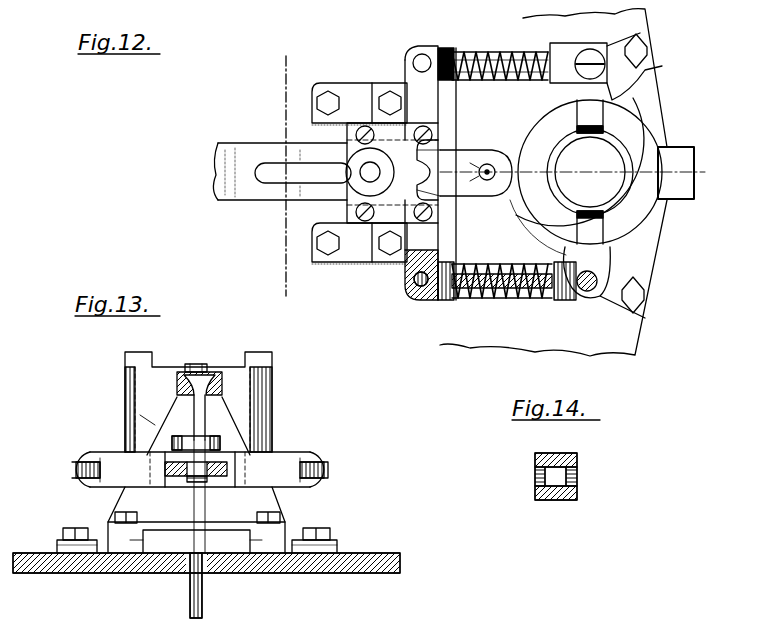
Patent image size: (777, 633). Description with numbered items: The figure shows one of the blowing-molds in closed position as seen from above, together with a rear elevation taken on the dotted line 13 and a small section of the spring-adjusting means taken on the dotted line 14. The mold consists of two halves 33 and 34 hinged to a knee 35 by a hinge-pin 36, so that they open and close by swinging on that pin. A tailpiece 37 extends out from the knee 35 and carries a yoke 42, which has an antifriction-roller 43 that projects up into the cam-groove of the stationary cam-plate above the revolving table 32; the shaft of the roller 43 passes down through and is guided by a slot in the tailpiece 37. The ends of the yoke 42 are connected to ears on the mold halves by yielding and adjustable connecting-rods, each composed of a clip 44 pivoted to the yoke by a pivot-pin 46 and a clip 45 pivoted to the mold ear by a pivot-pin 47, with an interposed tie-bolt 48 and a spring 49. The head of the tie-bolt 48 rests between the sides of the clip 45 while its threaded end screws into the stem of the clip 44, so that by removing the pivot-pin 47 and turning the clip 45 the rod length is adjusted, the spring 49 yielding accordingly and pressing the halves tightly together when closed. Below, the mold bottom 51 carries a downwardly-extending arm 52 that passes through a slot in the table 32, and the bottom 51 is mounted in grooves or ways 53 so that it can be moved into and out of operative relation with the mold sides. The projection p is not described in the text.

In FIG. 12, the dotted line 13 13 is at (298, 298).
In FIG. 12, the dotted line 14 14 is at (587, 320).
In FIG. 12, the revolving table 32 is at (643, 340).
In FIG. 13, the revolving table 32 is at (387, 554).
In FIG. 12, the mold half 33 is at (643, 133).
In FIG. 13, the mold half 33 is at (130, 395).
In FIG. 12, the mold half 34 is at (642, 220).
In FIG. 13, the mold half 34 is at (267, 382).
In FIG. 12, the knee 35 is at (490, 150).
In FIG. 13, the knee 35 is at (207, 376).
In FIG. 12, the hinge-pin 36 is at (473, 153).
In FIG. 13, the hinge-pin 36 is at (193, 366).
In FIG. 12, the tailpiece 37 is at (257, 199).
In FIG. 13, the tailpiece 37 is at (178, 477).
In FIG. 12, the yoke 42 is at (375, 223).
In FIG. 13, the yoke 42 is at (145, 456).
In FIG. 12, the antifriction-roller 43 is at (352, 155).
In FIG. 13, the antifriction-roller 43 is at (222, 440).
In FIG. 12, the clip 44 is at (447, 300).
In FIG. 13, the clip 44 is at (330, 470).
In FIG. 12, the clip 45 is at (559, 300).
In FIG. 14, the clip 45 is at (577, 457).
In FIG. 12, the pivot-pin 46 is at (417, 300).
In FIG. 12, the pivot-pin 47 is at (595, 290).
In FIG. 12, the tie-bolt 48 is at (523, 298).
In FIG. 14, the tie-bolt 48 is at (562, 478).
In FIG. 12, the spring 49 is at (477, 300).
In FIG. 13, the mold bottom 51 is at (227, 547).
In FIG. 13, the downwardly-extending arm 52 is at (189, 605).
In FIG. 13, the grooves or ways 53 is at (258, 548).
In FIG. 12, the projection p is at (692, 190).